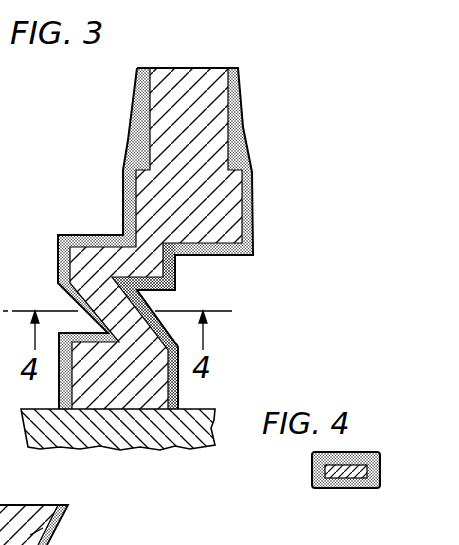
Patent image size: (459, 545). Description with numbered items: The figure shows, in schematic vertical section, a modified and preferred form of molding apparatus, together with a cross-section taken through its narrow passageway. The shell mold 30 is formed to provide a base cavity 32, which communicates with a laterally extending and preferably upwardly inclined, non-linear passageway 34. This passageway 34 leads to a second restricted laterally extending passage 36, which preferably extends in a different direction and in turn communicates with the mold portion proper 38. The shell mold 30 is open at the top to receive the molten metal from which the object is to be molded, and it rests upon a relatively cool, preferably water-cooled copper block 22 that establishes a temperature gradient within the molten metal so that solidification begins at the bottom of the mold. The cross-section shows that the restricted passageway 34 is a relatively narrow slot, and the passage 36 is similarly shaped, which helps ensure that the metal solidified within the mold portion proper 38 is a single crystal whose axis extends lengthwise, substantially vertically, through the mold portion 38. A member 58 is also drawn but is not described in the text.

In FIG. 3, the copper block 22 is at (168, 440).
In FIG. 3, the shell mold 30 is at (250, 232).
In FIG. 4, the shell mold 30 is at (322, 488).
In FIG. 3, the base cavity 32 is at (148, 387).
In FIG. 3, the passageway 34 is at (143, 311).
In FIG. 4, the passageway 34 is at (355, 478).
In FIG. 3, the second restricted laterally extending passage 36 is at (102, 257).
In FIG. 3, the mold portion proper 38 is at (217, 187).
In FIG. 3, the adjacent member 58 is at (58, 528).